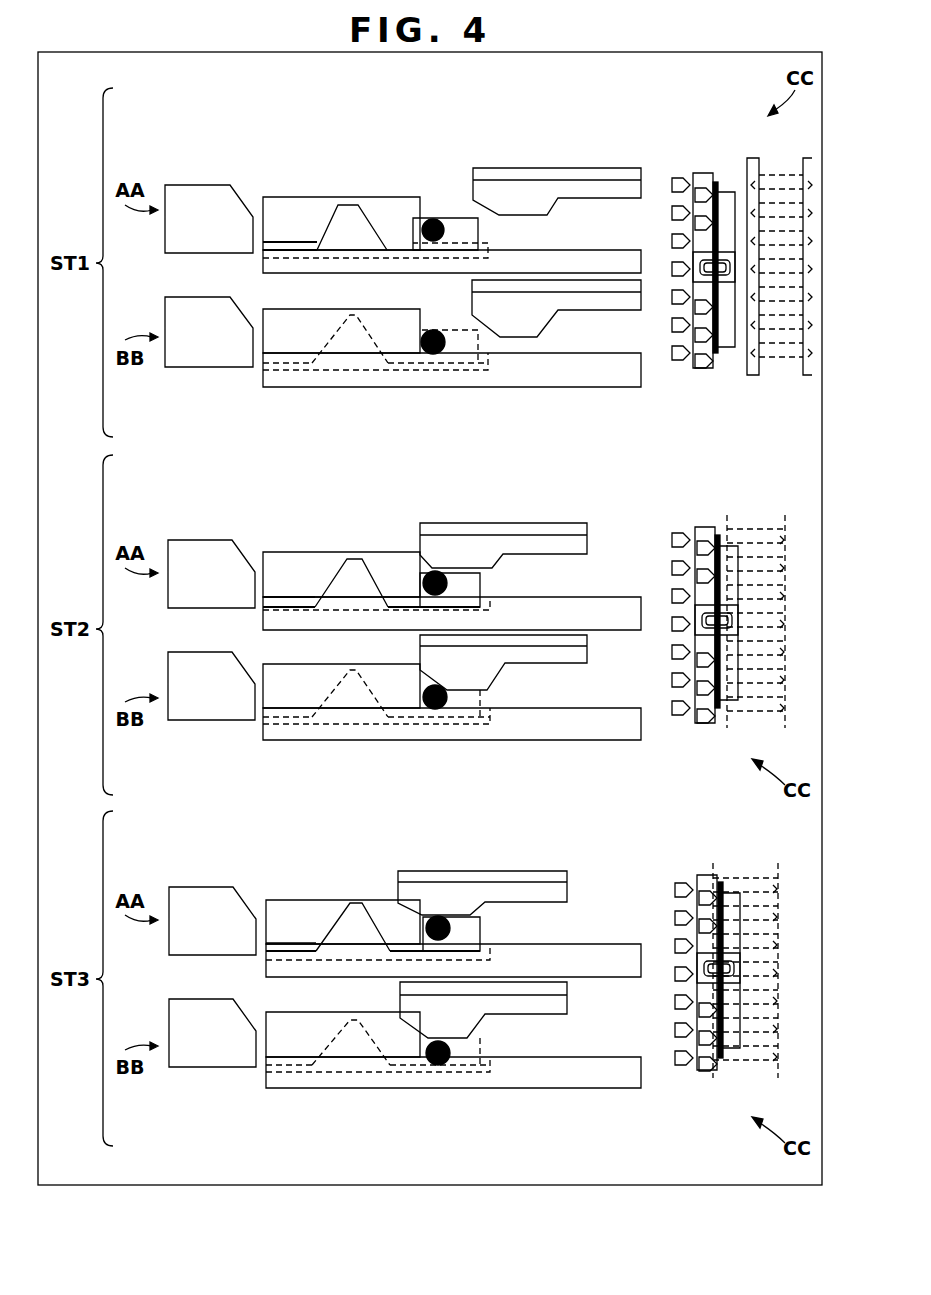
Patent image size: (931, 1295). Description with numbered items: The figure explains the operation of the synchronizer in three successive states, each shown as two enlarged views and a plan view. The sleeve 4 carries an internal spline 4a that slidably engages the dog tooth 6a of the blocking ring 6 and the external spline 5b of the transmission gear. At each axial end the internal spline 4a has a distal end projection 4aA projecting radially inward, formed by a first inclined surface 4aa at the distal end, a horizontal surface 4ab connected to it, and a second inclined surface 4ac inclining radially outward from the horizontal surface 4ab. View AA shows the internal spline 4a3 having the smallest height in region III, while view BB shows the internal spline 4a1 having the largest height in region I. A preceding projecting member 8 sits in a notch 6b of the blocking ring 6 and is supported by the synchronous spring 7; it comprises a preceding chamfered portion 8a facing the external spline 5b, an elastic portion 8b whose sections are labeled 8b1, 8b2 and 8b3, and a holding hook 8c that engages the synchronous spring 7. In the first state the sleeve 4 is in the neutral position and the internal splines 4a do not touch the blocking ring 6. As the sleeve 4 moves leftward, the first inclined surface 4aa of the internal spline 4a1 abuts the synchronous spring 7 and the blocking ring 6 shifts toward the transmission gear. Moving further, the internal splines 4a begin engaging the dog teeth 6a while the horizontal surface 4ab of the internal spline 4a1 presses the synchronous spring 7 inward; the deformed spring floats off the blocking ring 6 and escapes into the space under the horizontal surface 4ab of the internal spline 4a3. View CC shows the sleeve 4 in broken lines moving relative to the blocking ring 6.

The sleeve 4 is at (745, 875).
The internal spline 4a is at (773, 1092).
The distal end projection 4aA is at (520, 840).
The first inclined surface 4aa is at (410, 895).
The horizontal surface 4ab is at (440, 1038).
The second inclined surface 4ac is at (480, 905).
The internal spline having the largest height in region I 4a1 is at (570, 1028).
The internal spline having the smallest height in region III 4a3 is at (512, 892).
The external spline 5b is at (184, 1004).
The blocking ring 6 is at (555, 1080).
The dog tooth 6a is at (272, 1018).
The notch 6b is at (738, 1072).
The synchronous spring 7 is at (435, 1066).
The preceding projecting member 8 is at (697, 960).
The preceding chamfered portion 8a is at (272, 1068).
The elastic portion 8b is at (395, 854).
The protrusion first inclined portion 8b1 is at (330, 1048).
The protrusion top portion 8b2 is at (352, 1022).
The protrusion second inclined portion 8b3 is at (372, 1048).
The holding hook 8c is at (463, 1068).